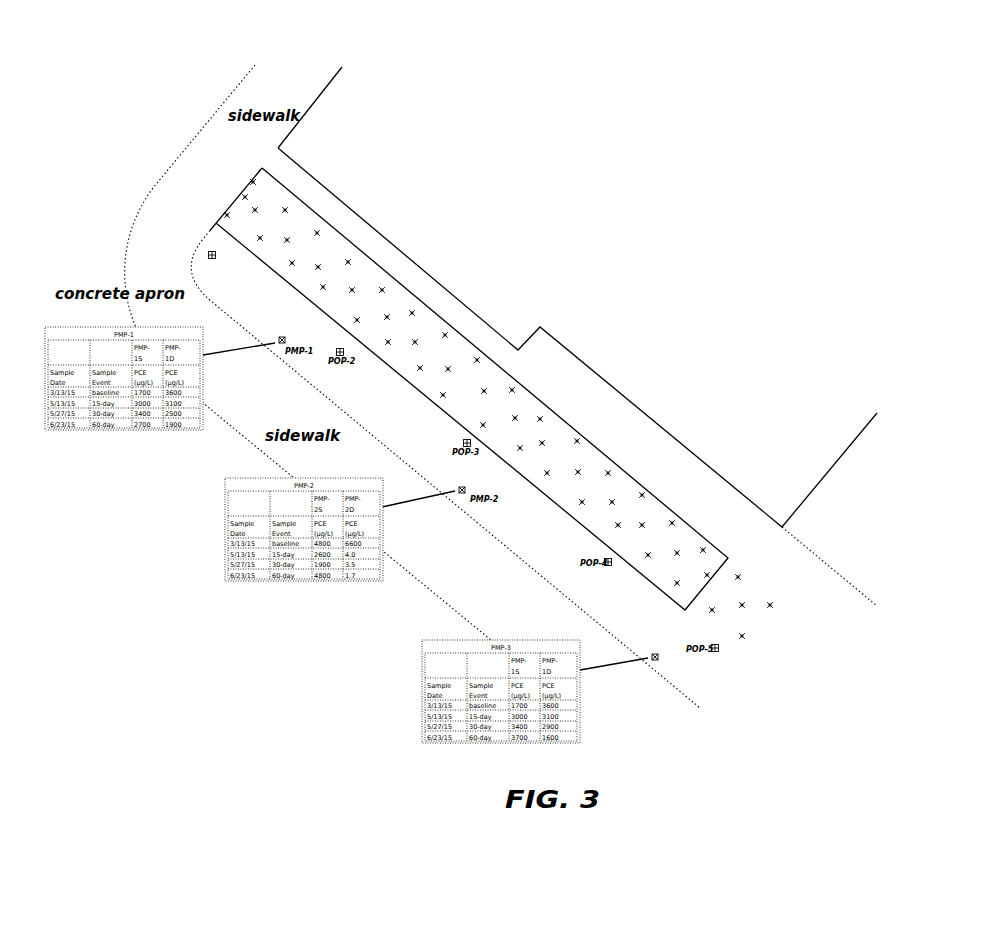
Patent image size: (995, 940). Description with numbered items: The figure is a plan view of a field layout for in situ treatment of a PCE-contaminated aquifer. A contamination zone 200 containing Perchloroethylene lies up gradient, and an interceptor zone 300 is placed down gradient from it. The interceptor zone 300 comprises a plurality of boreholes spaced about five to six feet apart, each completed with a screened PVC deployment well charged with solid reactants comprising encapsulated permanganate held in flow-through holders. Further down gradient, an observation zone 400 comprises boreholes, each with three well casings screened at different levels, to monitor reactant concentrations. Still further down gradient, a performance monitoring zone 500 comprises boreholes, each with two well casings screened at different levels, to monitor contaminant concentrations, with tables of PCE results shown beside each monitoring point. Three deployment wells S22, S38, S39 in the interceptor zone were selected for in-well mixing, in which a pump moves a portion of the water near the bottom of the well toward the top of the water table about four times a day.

The contamination zone 200 is at (587, 243).
The interceptor zone 300 is at (627, 473).
The observation zone 400 is at (201, 243).
The performance monitoring zone 500 is at (695, 681).
The deployment well S38 is at (327, 283).
The deployment well S22 is at (356, 289).
The deployment well S39 is at (353, 319).